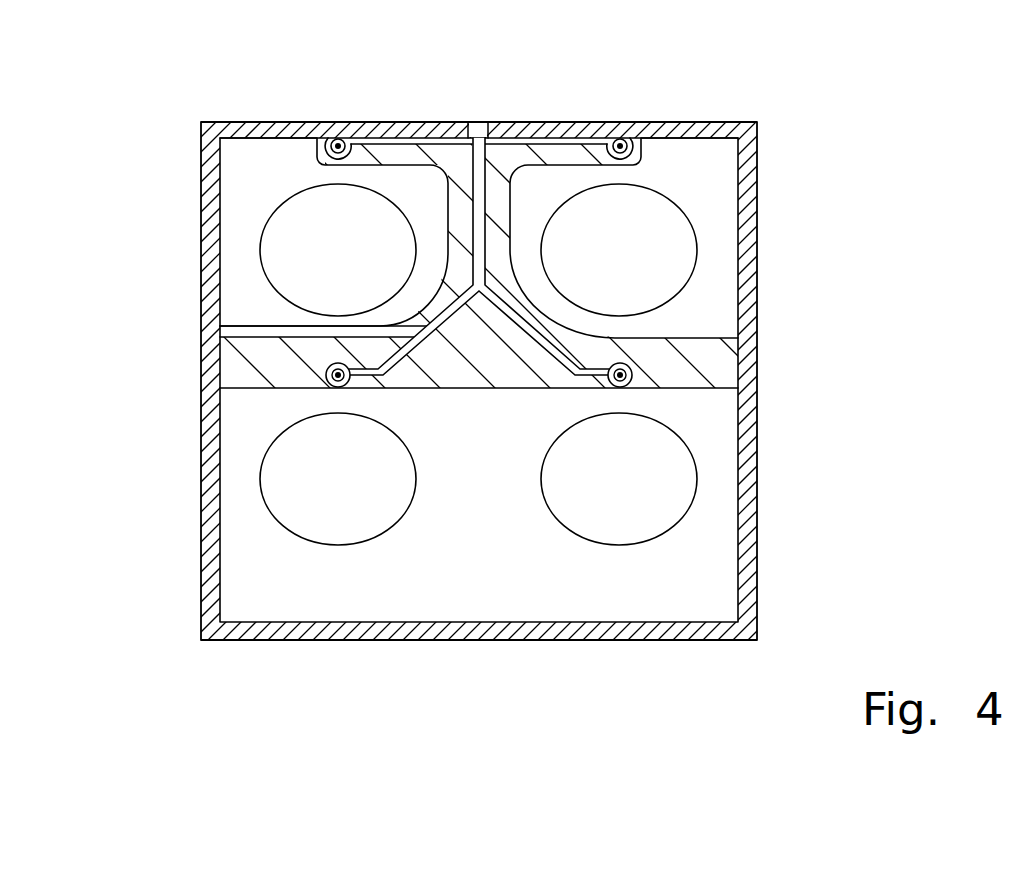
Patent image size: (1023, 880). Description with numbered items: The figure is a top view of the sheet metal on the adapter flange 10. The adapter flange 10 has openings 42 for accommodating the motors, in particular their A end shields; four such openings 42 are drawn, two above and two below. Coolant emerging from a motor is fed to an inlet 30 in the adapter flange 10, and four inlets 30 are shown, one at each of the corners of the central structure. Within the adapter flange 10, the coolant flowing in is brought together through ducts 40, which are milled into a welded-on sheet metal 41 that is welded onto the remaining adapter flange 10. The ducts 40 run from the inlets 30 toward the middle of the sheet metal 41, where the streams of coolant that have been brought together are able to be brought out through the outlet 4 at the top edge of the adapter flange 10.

The adapter flange 10 is at (748, 523).
The outlet 4 is at (478, 132).
The inlet for coolant 30 is at (335, 141).
The duct 40 is at (555, 142).
The welded-on sheet metal having welded-in ducts 41 is at (492, 361).
The opening for accommodating a motor 42 is at (326, 246).